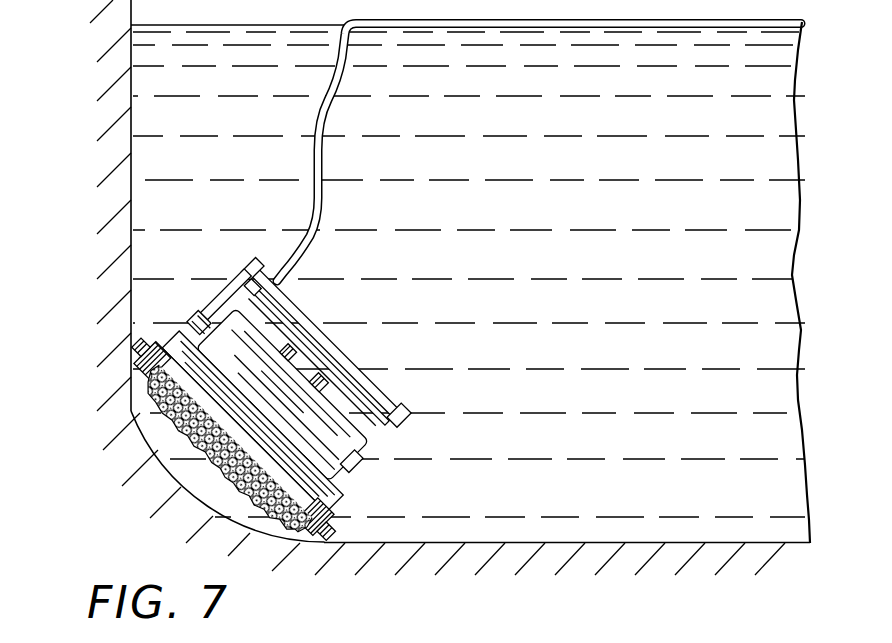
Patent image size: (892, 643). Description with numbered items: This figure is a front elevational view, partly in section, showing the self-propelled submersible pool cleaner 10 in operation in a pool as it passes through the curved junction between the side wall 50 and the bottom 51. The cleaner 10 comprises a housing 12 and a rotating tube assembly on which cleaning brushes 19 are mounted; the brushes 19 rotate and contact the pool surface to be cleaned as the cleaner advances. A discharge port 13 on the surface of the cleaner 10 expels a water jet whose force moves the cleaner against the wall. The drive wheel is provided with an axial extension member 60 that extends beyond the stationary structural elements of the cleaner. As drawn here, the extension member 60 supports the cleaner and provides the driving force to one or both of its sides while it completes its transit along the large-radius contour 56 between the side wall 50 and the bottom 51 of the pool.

The self-propelled submersible pool cleaner 10 is at (442, 437).
The housing 12 is at (360, 472).
The discharge port 13 is at (336, 388).
The cleaning brushes 19 is at (192, 450).
The side wall 50 is at (130, 63).
The bottom 51 is at (318, 545).
The large-radius contour 56 is at (150, 447).
The axial extension member 60 is at (137, 338).